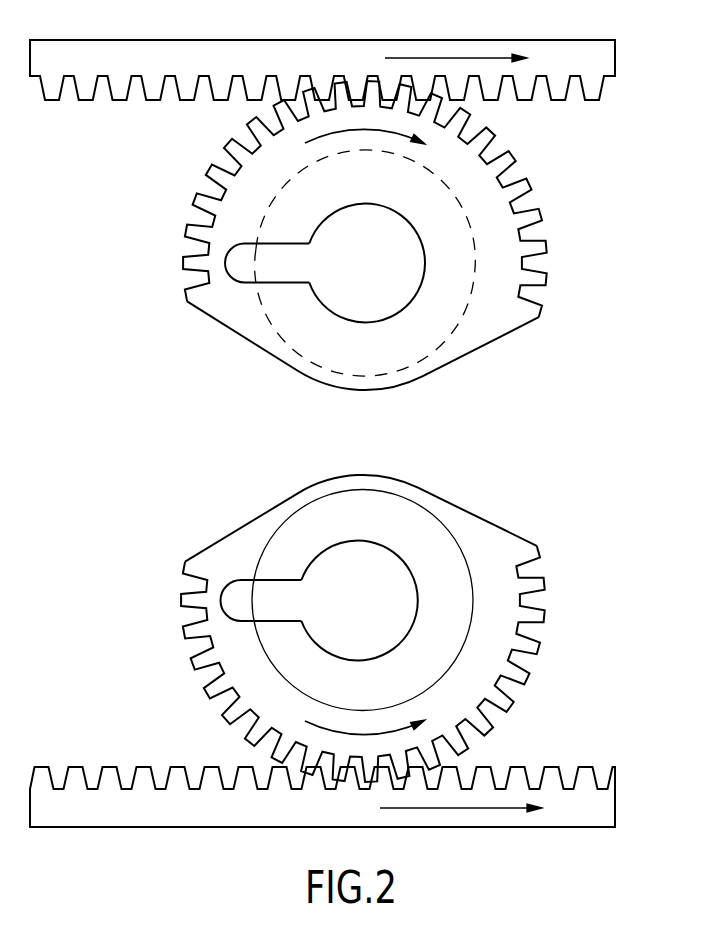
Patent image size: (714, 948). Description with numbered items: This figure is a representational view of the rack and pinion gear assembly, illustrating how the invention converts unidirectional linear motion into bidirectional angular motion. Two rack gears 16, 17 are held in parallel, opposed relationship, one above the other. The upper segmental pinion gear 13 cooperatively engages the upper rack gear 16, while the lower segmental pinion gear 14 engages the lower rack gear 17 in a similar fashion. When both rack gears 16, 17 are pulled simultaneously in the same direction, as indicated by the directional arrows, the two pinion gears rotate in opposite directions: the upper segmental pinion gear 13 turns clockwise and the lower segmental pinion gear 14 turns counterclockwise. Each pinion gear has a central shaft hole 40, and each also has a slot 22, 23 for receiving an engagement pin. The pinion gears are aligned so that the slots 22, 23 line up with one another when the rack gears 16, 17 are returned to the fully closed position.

The upper segmental pinion gear 13 is at (540, 218).
The lower segmental pinion gear 14 is at (528, 552).
The rack gear 16 is at (582, 38).
The rack gear 17 is at (532, 827).
The slot 22 is at (255, 283).
The slot 23 is at (272, 593).
The central shaft hole 40 is at (390, 305).